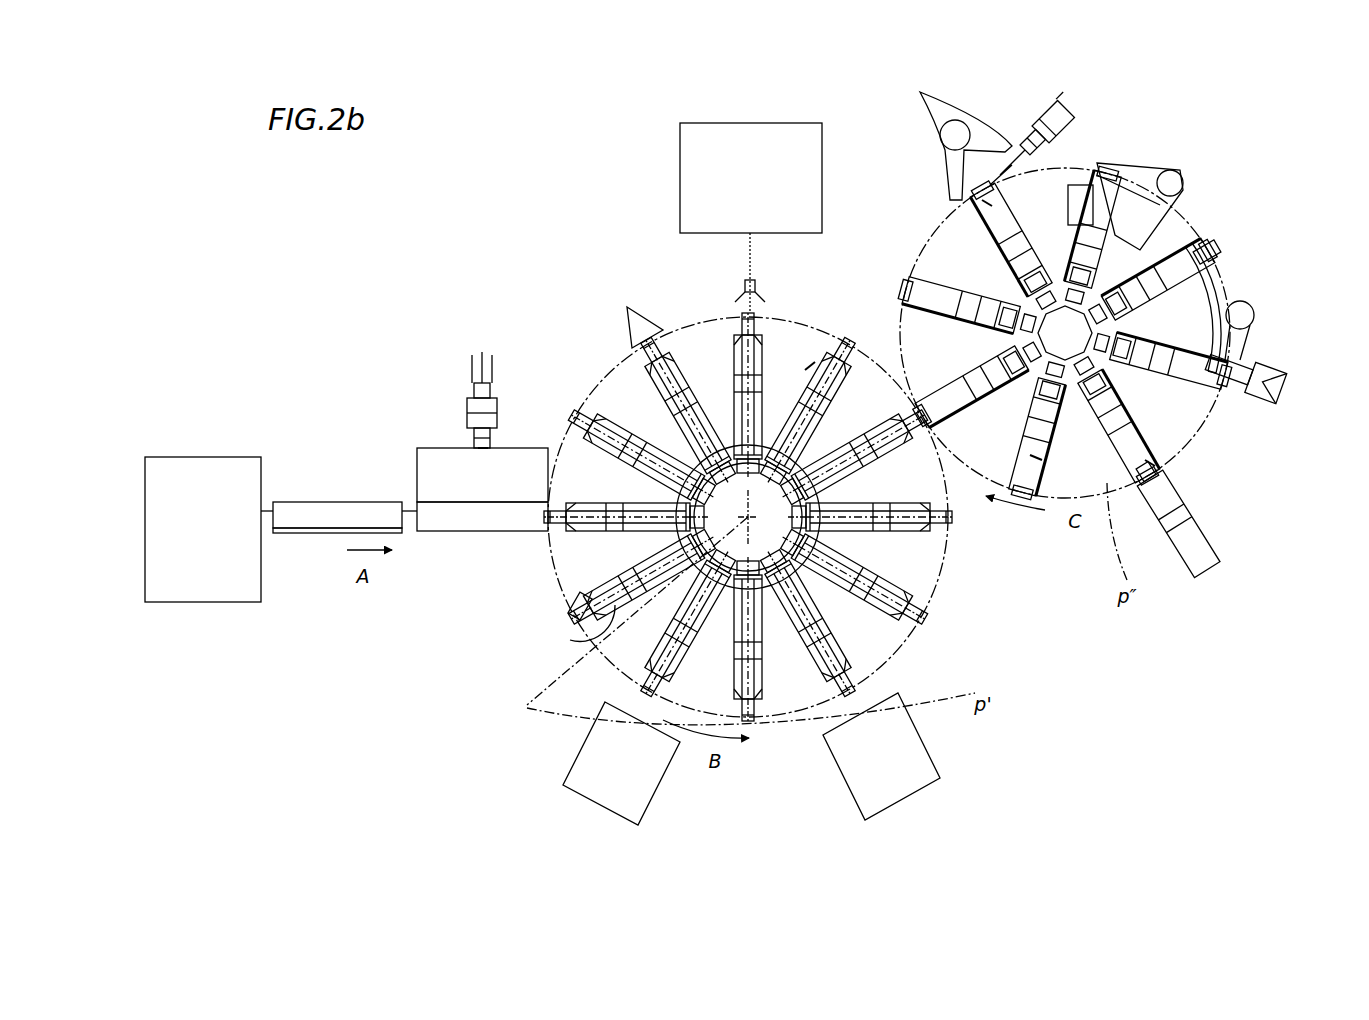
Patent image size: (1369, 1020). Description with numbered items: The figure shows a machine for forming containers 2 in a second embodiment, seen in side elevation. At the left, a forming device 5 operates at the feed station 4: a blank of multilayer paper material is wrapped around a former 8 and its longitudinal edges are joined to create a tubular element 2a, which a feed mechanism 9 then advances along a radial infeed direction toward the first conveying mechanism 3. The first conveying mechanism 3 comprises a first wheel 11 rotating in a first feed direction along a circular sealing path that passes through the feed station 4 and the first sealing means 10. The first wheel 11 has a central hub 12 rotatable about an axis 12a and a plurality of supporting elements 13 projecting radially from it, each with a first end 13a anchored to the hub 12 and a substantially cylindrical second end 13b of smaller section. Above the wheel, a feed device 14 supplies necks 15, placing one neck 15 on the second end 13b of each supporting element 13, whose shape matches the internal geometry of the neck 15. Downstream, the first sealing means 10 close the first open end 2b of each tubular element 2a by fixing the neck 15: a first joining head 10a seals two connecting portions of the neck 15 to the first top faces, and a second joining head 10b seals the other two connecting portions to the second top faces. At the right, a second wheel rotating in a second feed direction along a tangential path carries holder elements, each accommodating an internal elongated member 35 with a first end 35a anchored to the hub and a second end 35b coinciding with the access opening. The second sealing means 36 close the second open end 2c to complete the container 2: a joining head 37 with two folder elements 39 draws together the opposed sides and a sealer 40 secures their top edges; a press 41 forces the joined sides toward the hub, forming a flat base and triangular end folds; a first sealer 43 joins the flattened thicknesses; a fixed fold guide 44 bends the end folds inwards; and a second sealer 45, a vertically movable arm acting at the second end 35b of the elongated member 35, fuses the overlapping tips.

The container 2 is at (1207, 567).
The tubular element 2a is at (440, 500).
The first open end 2b is at (417, 505).
The second open end 2c is at (483, 453).
The first conveying mechanism 3 is at (810, 366).
The feed station 4 is at (541, 388).
The forming device 5 is at (209, 529).
The former 8 is at (290, 502).
The feed mechanism 9 is at (485, 367).
The first sealing means 10 is at (557, 766).
The first joining head 10a is at (621, 763).
The second joining head 10b is at (881, 756).
The first wheel 11 is at (860, 557).
The central hub 12 is at (757, 557).
The axis 12a is at (617, 617).
The supporting element 13 is at (610, 420).
The first end 13a is at (742, 425).
The second end 13b is at (838, 340).
The feed device 14 is at (630, 340).
The neck 15 is at (745, 283).
The elongated member 35 is at (1147, 433).
The first end 35a is at (1023, 360).
The second end 35b is at (1150, 468).
The second sealing means 36 is at (907, 390).
The joining head 37 is at (982, 111).
The folder element 39 is at (956, 133).
The sealer 40 is at (1047, 117).
The press 41 is at (1148, 172).
The first sealer 43 is at (1212, 247).
The fixed fold guide 44 is at (1203, 280).
The second sealer 45 is at (1267, 363).